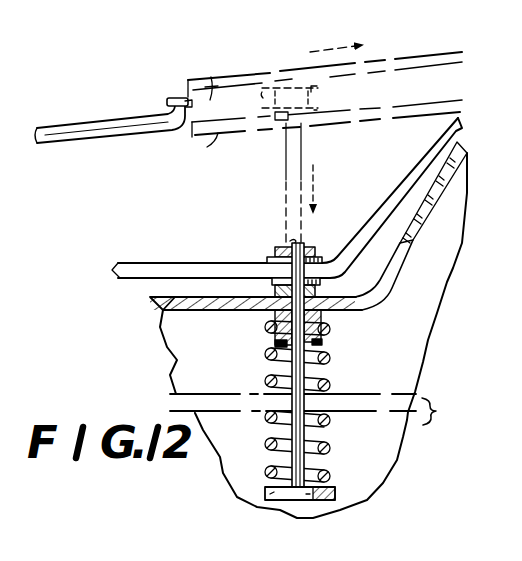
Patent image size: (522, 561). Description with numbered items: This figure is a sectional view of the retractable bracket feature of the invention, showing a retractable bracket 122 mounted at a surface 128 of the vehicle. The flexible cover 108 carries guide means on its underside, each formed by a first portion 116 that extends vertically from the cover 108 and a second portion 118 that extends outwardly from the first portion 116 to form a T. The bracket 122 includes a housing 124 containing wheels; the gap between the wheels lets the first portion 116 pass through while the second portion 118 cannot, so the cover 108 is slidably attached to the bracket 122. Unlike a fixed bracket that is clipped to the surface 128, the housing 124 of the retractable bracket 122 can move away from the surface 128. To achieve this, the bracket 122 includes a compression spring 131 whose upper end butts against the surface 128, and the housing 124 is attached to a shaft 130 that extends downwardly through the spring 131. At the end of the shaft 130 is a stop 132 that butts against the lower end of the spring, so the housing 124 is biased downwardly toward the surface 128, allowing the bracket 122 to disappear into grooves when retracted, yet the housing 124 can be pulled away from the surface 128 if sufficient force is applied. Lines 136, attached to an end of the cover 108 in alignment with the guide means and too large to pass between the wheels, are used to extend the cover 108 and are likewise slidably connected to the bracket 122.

The cover 108 is at (247, 72).
The first portion 116 is at (220, 72).
The second portion 118 is at (212, 137).
The retractable bracket 122 is at (318, 238).
The housing 124 is at (275, 248).
The surface 128 is at (376, 290).
The shaft 130 is at (332, 467).
The compression spring 131 is at (325, 358).
The stop 132 is at (277, 496).
The lines 136 is at (80, 137).